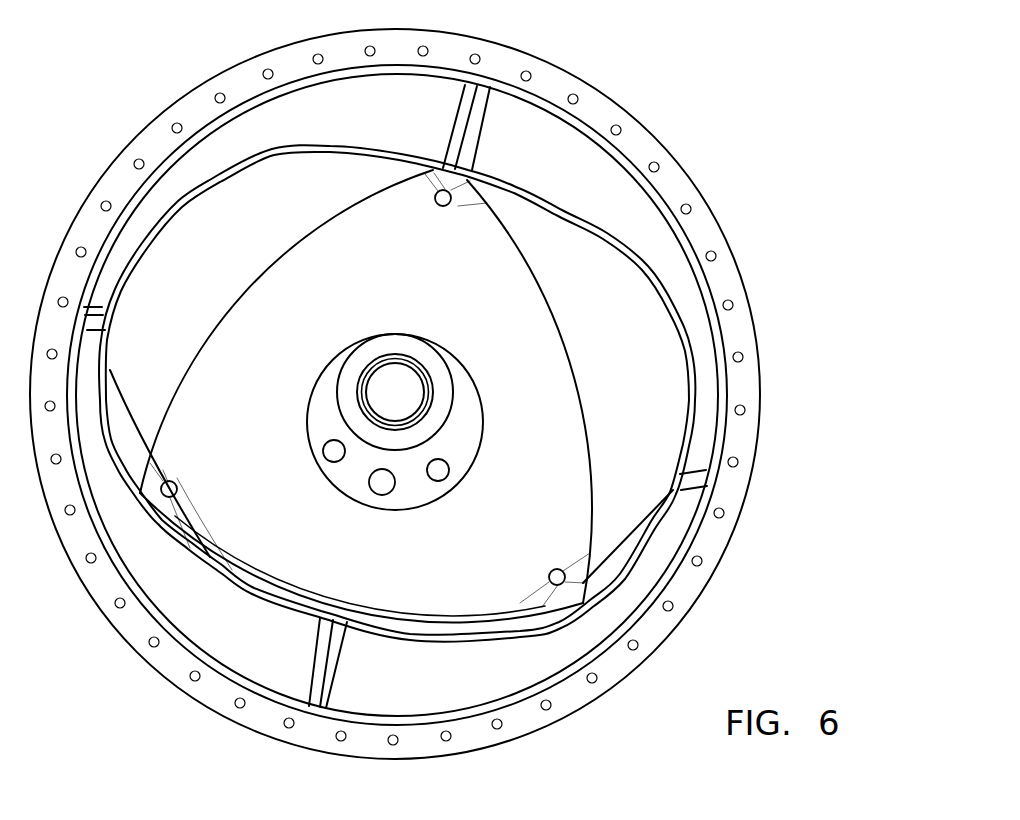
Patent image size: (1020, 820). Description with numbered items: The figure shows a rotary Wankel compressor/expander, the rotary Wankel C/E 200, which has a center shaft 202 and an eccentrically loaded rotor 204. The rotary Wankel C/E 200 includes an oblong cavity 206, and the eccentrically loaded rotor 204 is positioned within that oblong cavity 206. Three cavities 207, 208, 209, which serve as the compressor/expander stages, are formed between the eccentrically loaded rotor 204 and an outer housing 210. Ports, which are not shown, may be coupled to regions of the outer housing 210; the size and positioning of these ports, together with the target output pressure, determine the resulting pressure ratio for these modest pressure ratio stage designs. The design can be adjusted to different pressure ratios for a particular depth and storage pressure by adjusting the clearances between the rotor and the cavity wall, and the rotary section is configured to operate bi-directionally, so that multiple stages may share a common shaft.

The rotary Wankel C/E 200 is at (711, 110).
The center shaft 202 is at (405, 390).
The eccentrically loaded rotor 204 is at (248, 497).
The oblong cavity 206 is at (607, 407).
The cavity (C/E stage) 207 is at (655, 358).
The cavity (C/E stage) 208 is at (244, 222).
The cavity (C/E stage) 209 is at (436, 622).
The outer housing 210 is at (320, 617).